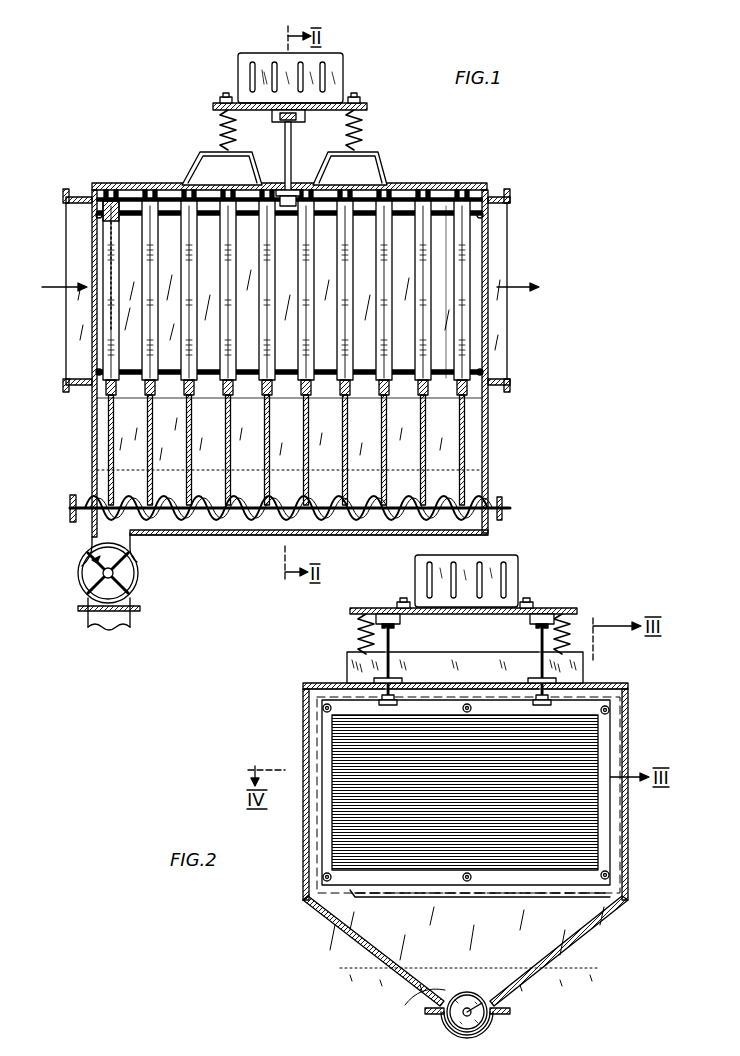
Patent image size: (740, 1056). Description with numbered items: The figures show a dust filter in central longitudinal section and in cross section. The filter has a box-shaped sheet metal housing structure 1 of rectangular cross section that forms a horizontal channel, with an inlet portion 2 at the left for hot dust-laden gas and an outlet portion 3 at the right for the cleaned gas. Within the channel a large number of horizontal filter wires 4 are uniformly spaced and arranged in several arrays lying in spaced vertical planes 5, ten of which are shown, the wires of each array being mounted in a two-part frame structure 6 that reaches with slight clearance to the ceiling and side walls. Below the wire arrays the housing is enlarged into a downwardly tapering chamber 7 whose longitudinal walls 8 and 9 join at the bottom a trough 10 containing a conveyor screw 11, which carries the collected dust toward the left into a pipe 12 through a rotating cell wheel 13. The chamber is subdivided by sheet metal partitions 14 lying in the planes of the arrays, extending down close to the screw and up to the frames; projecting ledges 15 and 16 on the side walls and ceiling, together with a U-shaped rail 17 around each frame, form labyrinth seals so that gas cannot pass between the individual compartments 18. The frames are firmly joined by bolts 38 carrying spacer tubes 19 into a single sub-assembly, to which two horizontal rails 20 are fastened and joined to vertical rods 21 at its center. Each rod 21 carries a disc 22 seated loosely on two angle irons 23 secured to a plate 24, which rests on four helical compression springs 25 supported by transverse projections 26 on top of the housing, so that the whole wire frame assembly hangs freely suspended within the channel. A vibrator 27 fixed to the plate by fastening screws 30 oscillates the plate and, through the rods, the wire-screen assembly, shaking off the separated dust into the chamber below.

In FIG. 1, the housing structure 1 is at (465, 185).
In FIG. 2, the housing structure 1 is at (628, 720).
In FIG. 1, the inlet portion 2 is at (75, 200).
In FIG. 1, the outlet portion 3 is at (498, 232).
In FIG. 1, the filter wires 4 is at (108, 232).
In FIG. 2, the filter wires 4 is at (580, 817).
In FIG. 1, the vertical planes 5 is at (147, 318).
In FIG. 1, the frame structure 6 is at (123, 200).
In FIG. 2, the frame structure 6 is at (605, 852).
In FIG. 1, the chamber 7 is at (478, 461).
In FIG. 2, the chamber 7 is at (385, 946).
In FIG. 2, the longitudinal wall 8 is at (326, 922).
In FIG. 2, the longitudinal wall 9 is at (590, 930).
In FIG. 1, the trough 10 is at (486, 536).
In FIG. 2, the trough 10 is at (492, 1030).
In FIG. 1, the conveyor screw 11 is at (420, 518).
In FIG. 2, the conveyor screw 11 is at (450, 1030).
In FIG. 1, the pipe 12 is at (118, 627).
In FIG. 1, the rotating cell wheel 13 is at (135, 578).
In FIG. 1, the partitions 14 is at (463, 433).
In FIG. 2, the partitions 14 is at (430, 987).
In FIG. 2, the ledge 15 is at (305, 892).
In FIG. 1, the ledge 16 is at (432, 185).
In FIG. 2, the ledge 16 is at (310, 683).
In FIG. 1, the rail 17 is at (397, 195).
In FIG. 2, the rail 17 is at (385, 898).
In FIG. 1, the compartments 18 is at (245, 455).
In FIG. 1, the spacer tubes 19 is at (446, 370).
In FIG. 1, the horizontal rails 20 is at (170, 198).
In FIG. 2, the horizontal rails 20 is at (396, 702).
In FIG. 1, the vertical rods 21 is at (291, 152).
In FIG. 2, the vertical rods 21 is at (392, 645).
In FIG. 1, the disc 22 is at (278, 120).
In FIG. 2, the disc 22 is at (548, 612).
In FIG. 1, the angle irons 23 is at (300, 120).
In FIG. 1, the plate 24 is at (366, 106).
In FIG. 2, the plate 24 is at (367, 606).
In FIG. 1, the helical compression springs 25 is at (362, 128).
In FIG. 2, the helical compression springs 25 is at (358, 633).
In FIG. 1, the transverse projections 26 is at (200, 158).
In FIG. 2, the transverse projections 26 is at (585, 668).
In FIG. 1, the vibrator 27 is at (335, 72).
In FIG. 2, the vibrator 27 is at (520, 572).
In FIG. 1, the fastening screws 30 is at (346, 100).
In FIG. 2, the fastening screws 30 is at (402, 600).
In FIG. 1, the bolts 38 is at (480, 372).
In FIG. 2, the bolts 38 is at (470, 882).